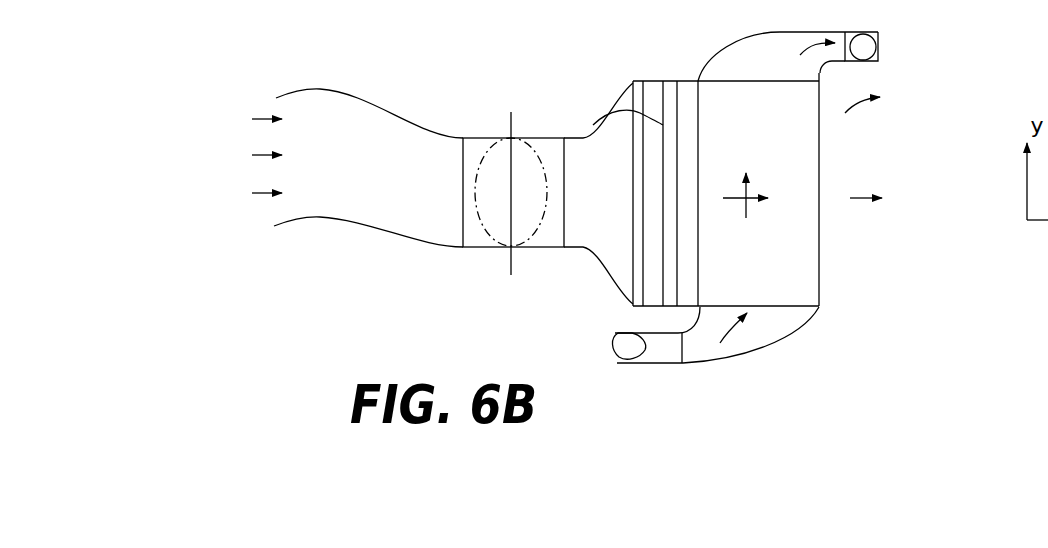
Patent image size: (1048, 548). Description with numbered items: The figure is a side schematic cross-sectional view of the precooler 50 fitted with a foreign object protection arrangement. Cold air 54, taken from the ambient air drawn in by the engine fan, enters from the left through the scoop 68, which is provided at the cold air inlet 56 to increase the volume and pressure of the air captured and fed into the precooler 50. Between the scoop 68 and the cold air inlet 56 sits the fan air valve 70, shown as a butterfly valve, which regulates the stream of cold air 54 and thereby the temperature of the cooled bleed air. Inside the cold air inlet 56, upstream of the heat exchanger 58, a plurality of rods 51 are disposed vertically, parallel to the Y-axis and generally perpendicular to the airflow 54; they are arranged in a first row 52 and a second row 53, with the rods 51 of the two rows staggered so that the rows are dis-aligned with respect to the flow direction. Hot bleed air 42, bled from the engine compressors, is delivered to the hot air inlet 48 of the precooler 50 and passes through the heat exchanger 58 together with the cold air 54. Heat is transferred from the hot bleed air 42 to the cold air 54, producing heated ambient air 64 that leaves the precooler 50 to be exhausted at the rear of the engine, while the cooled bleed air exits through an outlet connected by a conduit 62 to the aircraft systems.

The hot bleed air 42 is at (659, 351).
The hot air inlet 48 is at (803, 330).
The precooler 50 is at (271, 243).
The rods 51 is at (633, 145).
The first row of rods 52 is at (632, 242).
The second row of rods 53 is at (663, 273).
The cold air 54 is at (262, 118).
The cold air inlet 56 is at (594, 205).
The heat exchanger 58 is at (760, 268).
The conduit 62 is at (878, 32).
The heated ambient air 64 is at (842, 282).
The scoop 68 is at (382, 237).
The fan air valve 70 is at (538, 248).